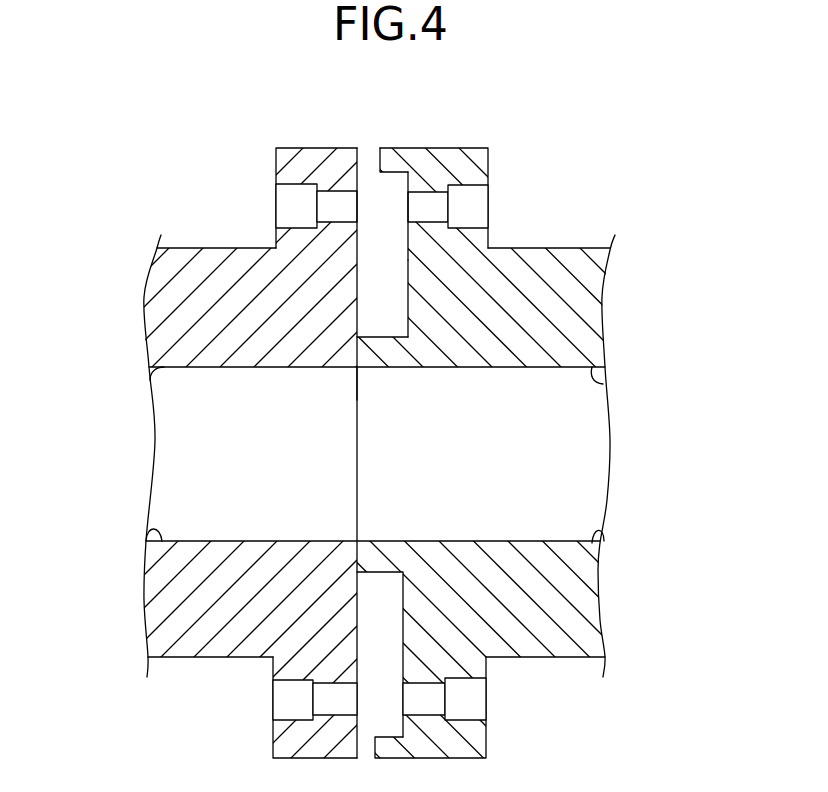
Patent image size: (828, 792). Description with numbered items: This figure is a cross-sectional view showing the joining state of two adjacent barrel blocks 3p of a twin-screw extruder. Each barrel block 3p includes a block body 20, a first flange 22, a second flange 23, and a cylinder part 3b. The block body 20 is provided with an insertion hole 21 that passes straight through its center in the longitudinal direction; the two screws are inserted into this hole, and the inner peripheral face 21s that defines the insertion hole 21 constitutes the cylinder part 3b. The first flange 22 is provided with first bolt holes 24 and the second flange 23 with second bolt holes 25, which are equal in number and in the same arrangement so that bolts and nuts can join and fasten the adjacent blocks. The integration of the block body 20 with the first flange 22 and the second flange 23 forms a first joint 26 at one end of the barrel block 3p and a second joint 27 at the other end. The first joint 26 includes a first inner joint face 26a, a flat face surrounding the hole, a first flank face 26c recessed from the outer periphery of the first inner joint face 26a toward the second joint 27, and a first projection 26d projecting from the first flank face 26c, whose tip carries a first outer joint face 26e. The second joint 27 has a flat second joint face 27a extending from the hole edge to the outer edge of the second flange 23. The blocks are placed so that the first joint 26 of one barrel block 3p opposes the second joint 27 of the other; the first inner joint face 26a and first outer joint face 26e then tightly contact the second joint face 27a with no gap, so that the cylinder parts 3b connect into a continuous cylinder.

The barrel block 3p is at (198, 148).
The cylinder part 3b is at (150, 380).
The block body 20 is at (210, 262).
The insertion hole 21 is at (177, 483).
The inner peripheral face 21s is at (147, 537).
The first flange 22 is at (458, 157).
The second flange 23 is at (320, 163).
The first bolt holes 24 is at (470, 702).
The second bolt holes 25 is at (292, 703).
The first joint 26 is at (342, 565).
The first inner joint face 26a is at (358, 377).
The first flank face 26c is at (392, 309).
The first projection 26d is at (391, 162).
The first outer joint face 26e is at (378, 167).
The second joint 27 is at (373, 625).
The second joint face 27a is at (360, 237).